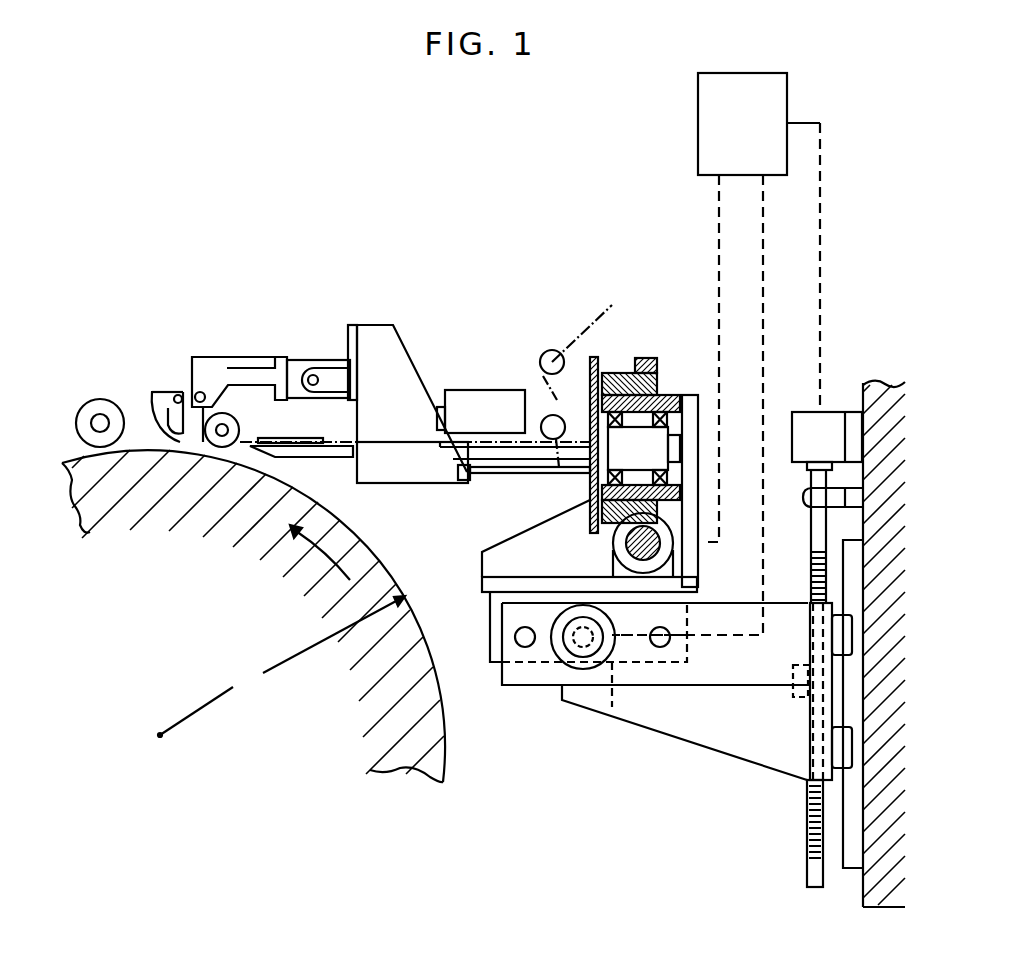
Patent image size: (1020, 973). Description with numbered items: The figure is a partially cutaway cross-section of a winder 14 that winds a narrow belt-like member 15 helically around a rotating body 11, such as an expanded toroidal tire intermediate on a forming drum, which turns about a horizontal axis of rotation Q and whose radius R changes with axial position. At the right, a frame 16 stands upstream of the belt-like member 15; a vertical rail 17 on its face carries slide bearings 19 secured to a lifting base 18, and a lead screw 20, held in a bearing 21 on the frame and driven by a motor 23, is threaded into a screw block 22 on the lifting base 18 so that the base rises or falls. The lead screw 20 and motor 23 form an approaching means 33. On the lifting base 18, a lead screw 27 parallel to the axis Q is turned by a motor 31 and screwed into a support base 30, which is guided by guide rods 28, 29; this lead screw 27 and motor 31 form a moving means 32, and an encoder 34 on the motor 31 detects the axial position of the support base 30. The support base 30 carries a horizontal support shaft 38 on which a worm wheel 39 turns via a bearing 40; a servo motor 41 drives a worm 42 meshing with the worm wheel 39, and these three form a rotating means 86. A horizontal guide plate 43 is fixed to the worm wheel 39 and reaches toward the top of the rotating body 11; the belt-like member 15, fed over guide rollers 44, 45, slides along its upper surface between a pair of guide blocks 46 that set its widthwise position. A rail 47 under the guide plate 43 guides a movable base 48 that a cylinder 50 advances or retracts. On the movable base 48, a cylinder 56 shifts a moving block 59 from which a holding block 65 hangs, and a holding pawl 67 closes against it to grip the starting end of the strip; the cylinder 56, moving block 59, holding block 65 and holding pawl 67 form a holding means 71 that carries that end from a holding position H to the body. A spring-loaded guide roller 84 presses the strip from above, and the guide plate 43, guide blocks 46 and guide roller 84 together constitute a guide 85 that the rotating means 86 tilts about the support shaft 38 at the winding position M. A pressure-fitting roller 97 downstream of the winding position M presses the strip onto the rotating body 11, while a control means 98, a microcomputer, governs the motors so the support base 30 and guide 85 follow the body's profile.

The rotating body 11 is at (445, 765).
The winder 14 is at (497, 324).
The belt-like member 15 is at (537, 380).
The frame 16 is at (872, 908).
The rail 17 is at (846, 870).
The lifting base 18 is at (700, 736).
The slide bearings 19 is at (848, 629).
The lead screw 20 is at (807, 846).
The bearing 21 is at (806, 496).
The screw block 22 is at (793, 700).
The motor 23 is at (834, 412).
The lead screw 27 is at (588, 653).
The guide rod 28 is at (515, 637).
The guide rod 29 is at (670, 640).
The support base 30 is at (500, 552).
The motor 31 is at (584, 658).
The moving means 32 is at (612, 735).
The approaching means 33 is at (832, 362).
The encoder 34 is at (568, 656).
The support shaft 38 is at (645, 448).
The worm wheel 39 is at (641, 358).
The bearing 40 is at (668, 392).
The servo motor 41 is at (614, 548).
The worm 42 is at (660, 546).
The guide plate 43 is at (356, 470).
The guide roller 44 is at (552, 350).
The guide roller 45 is at (556, 440).
The guide blocks 46 is at (292, 437).
The rail 47 is at (508, 469).
The movable base 48 is at (372, 326).
The cylinder 50 is at (485, 400).
The cylinder 56 is at (297, 361).
The moving block 59 is at (212, 370).
The holding block 65 is at (182, 447).
The holding pawl 67 is at (150, 393).
The holding means 71 is at (173, 372).
The guide roller 84 is at (240, 431).
The guide 85 is at (340, 436).
The rotating means 86 is at (654, 320).
The pressure-fitting roller 97 is at (95, 399).
The control means 98 is at (698, 120).
The holding position H is at (307, 450).
The winding position M is at (197, 446).
The axis of rotation Q is at (160, 736).
The radius R is at (282, 665).